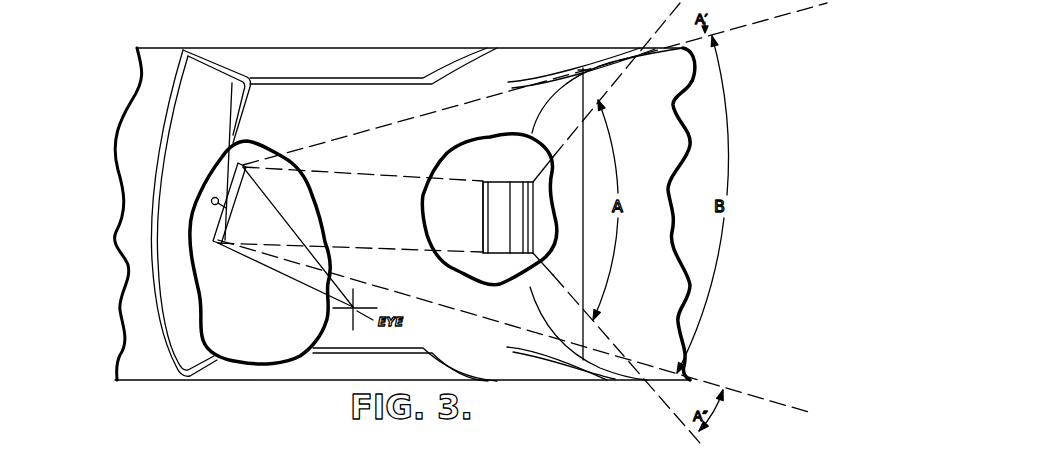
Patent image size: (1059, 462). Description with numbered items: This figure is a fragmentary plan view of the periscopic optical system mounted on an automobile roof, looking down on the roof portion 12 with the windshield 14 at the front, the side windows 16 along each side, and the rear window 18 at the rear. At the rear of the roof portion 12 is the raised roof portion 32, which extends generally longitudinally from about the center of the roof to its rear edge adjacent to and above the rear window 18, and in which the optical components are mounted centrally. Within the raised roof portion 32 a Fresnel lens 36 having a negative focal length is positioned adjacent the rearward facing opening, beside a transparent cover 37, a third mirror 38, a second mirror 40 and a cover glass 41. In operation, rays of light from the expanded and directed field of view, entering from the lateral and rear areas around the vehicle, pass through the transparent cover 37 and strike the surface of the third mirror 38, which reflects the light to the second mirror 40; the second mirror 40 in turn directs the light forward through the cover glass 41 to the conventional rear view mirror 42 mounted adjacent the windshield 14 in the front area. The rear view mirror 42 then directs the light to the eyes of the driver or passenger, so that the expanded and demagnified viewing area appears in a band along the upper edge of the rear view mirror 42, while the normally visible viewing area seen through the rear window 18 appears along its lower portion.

The roof portion 12 is at (330, 119).
The windshield 14 is at (188, 140).
The side windows 16 is at (288, 63).
The rear window 18 is at (583, 91).
The raised roof portion 32 is at (397, 195).
The Fresnel lens 36 is at (483, 232).
The transparent cover 37 is at (541, 212).
The third mirror 38 is at (497, 208).
The second mirror 40 is at (497, 208).
The cover glass 41 is at (483, 234).
The rear view mirror 42 is at (217, 222).